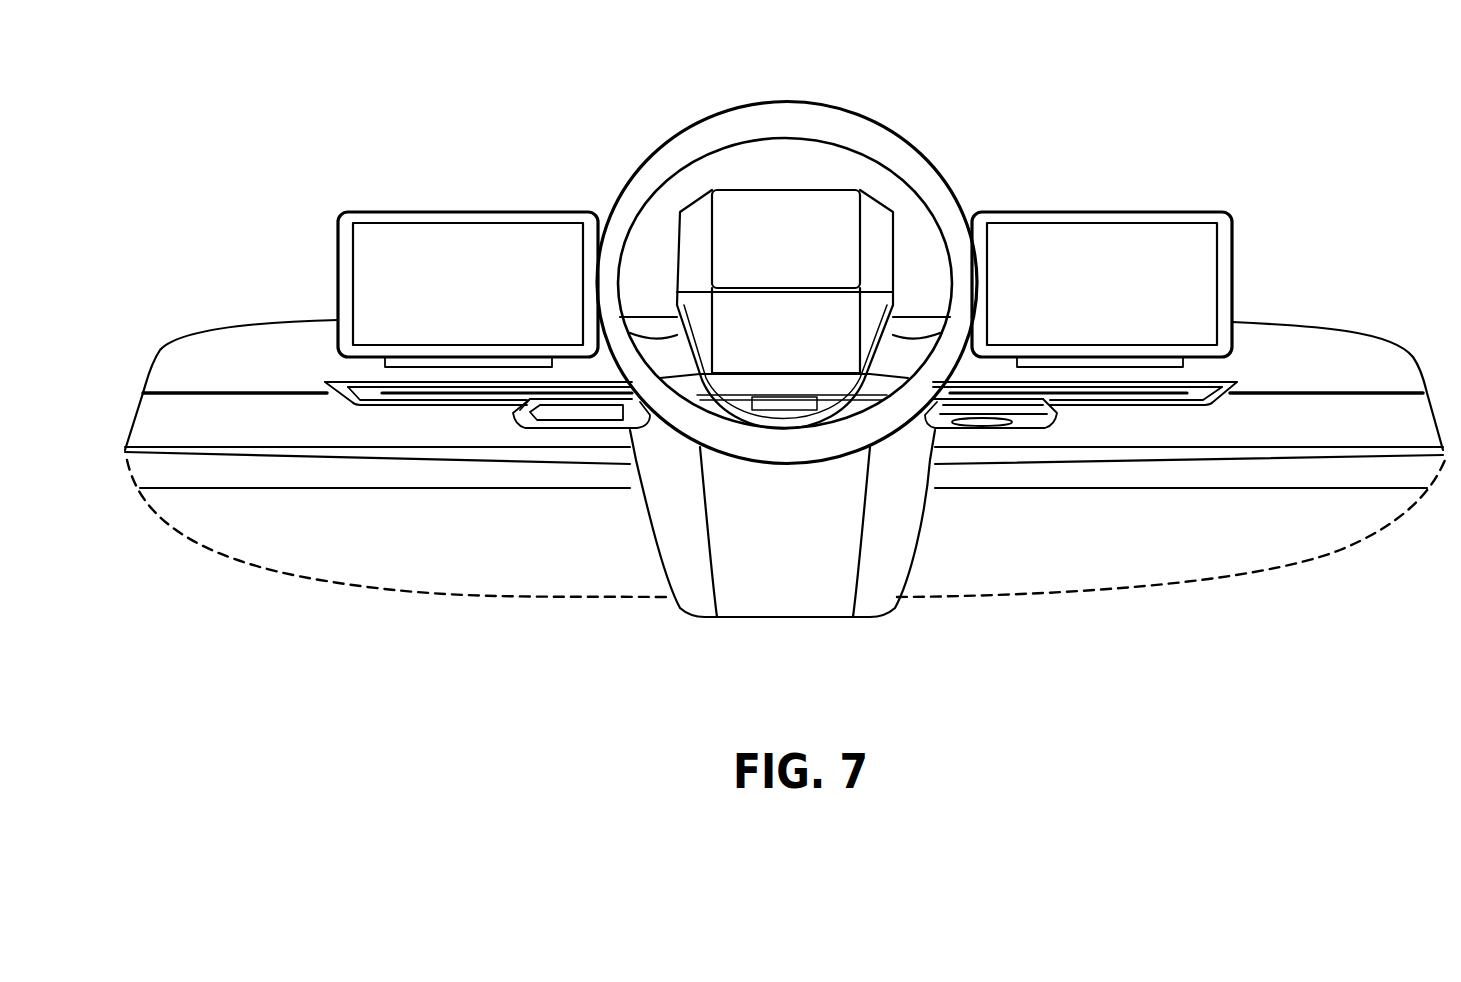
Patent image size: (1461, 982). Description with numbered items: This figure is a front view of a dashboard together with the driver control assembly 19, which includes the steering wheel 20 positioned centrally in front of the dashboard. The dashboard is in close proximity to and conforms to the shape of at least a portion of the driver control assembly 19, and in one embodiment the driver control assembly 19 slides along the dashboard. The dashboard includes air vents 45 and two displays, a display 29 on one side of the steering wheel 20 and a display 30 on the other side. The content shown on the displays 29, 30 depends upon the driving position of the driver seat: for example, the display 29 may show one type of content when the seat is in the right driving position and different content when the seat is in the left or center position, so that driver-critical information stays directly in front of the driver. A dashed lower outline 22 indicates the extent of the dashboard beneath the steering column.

The driver control assembly 19 is at (646, 637).
The steering wheel 20 is at (867, 118).
The dashboard lower outline 22 is at (1150, 590).
The display 29 is at (1115, 243).
The display 30 is at (467, 247).
The air vents 45 is at (1218, 383).